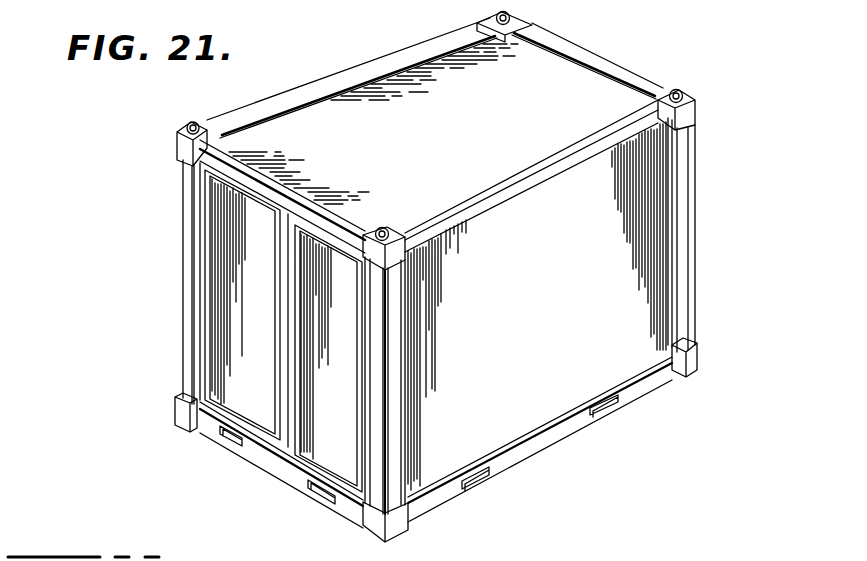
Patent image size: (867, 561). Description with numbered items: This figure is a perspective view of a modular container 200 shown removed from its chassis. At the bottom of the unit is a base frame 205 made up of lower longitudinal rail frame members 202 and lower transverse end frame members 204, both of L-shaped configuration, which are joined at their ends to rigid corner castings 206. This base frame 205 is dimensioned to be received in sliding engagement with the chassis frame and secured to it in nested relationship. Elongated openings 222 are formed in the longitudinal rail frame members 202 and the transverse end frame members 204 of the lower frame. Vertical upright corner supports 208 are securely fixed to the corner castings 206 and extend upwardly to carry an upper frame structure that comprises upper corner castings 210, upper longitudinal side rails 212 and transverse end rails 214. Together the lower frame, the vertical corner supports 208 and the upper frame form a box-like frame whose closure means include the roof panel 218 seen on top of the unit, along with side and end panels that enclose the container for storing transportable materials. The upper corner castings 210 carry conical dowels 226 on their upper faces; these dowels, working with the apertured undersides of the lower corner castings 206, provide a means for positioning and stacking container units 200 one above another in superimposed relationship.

The modular container 200 is at (176, 225).
The lower longitudinal rail frame member 202 is at (538, 452).
The lower transverse end frame member 204 is at (268, 465).
The base frame 205 is at (173, 412).
The corner casting 206 is at (178, 420).
The vertical upright corner support 208 is at (185, 292).
The upper frame corner casting 210 is at (183, 150).
The upper longitudinal side rail 212 is at (322, 80).
The transverse end rail 214 is at (305, 186).
The roof panel 218 is at (469, 158).
The elongated opening 222 is at (220, 355).
The conical dowel 226 is at (195, 122).